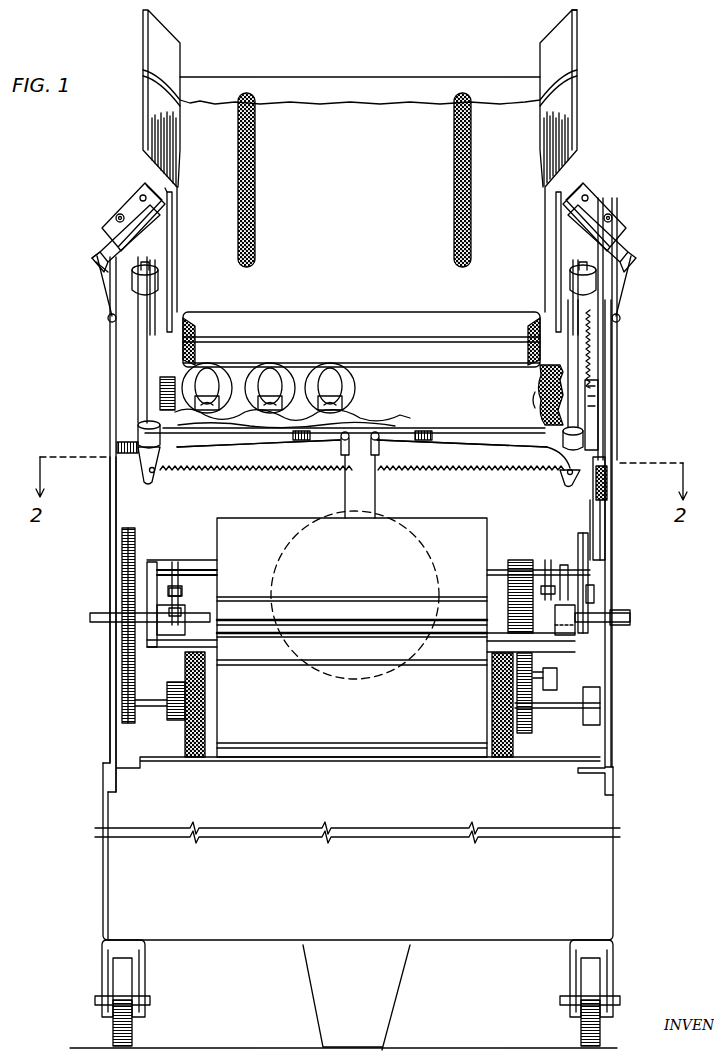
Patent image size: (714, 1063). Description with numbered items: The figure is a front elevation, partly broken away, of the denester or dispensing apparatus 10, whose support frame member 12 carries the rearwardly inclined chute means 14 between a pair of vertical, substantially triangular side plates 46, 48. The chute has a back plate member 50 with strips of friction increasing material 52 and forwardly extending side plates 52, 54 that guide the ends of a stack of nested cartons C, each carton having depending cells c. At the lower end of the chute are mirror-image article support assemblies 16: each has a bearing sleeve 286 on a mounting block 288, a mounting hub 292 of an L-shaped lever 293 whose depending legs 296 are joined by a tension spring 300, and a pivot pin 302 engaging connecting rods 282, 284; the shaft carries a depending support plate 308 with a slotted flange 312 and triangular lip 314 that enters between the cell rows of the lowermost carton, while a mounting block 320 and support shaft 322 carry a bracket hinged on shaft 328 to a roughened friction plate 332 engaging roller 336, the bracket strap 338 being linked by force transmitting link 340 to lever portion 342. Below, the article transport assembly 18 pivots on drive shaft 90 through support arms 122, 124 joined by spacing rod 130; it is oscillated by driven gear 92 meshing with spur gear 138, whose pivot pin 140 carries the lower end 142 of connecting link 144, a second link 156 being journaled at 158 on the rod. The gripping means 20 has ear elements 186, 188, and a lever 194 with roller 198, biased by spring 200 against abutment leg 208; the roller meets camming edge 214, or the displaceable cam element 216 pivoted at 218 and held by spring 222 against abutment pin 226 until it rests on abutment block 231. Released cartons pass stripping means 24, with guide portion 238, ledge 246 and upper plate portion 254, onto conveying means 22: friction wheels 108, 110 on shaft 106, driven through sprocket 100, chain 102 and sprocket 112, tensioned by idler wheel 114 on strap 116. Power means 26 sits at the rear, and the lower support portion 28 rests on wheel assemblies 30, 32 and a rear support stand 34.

The denester or dispensing apparatus 10 is at (638, 335).
The support frame member 12 is at (620, 704).
The chute means 14 is at (592, 121).
The article support assemblies 16 is at (193, 274).
The article transport assembly 18 is at (608, 594).
The article gripping means 20 is at (145, 660).
The article conveying means 22 is at (519, 770).
The article stripping means 24 is at (341, 732).
The power means 26 is at (412, 514).
The lower support portion 28 is at (614, 782).
The wheel assembly 30 is at (616, 963).
The wheel assembly 32 is at (100, 958).
The rear depending support stand 34 is at (400, 968).
The support side wall or plate 46 is at (117, 395).
The support side wall or plate 48 is at (617, 375).
The back plate member 50 is at (352, 138).
The forwardly extending side plate / friction strips 52 is at (150, 43).
The forwardly extending side plate 54 is at (580, 50).
The drive shaft 90 is at (92, 613).
The driven gear 92 is at (519, 560).
The drive sprocket 100 is at (120, 530).
The endless link chain 102 is at (122, 548).
The transverse support shaft 106 is at (565, 708).
The friction wheel 108 is at (496, 762).
The friction wheel 110 is at (194, 760).
The driven sprocket 112 is at (130, 725).
The idler wheel 114 is at (147, 592).
The mounting strap 116 is at (147, 568).
The support arm 122 is at (150, 560).
The support arm 124 is at (560, 625).
The spacing rod 130 is at (205, 568).
The spur gear 138 is at (528, 735).
The pivot pin 140 is at (540, 678).
The lower end of connecting link 142 is at (557, 680).
The adjustable connecting link 144 is at (548, 560).
The second adjustable connecting link 156 is at (183, 590).
The journal of second link on rod 158 is at (175, 560).
The support ear element 186 is at (575, 635).
The support ear element 188 is at (160, 625).
The lever 194 is at (588, 572).
The cam-engaging roller element 198 is at (588, 560).
The tension spring 200 is at (575, 555).
The abutment leg portion 208 is at (594, 600).
The camming edge 214 is at (600, 521).
The displaceable cam element 216 is at (596, 398).
The lateral pivot axis 218 is at (583, 418).
The tension spring 222 is at (592, 362).
The abutment pin 226 is at (595, 390).
The abutment block 231 is at (605, 485).
The angular guide portion 238 is at (368, 556).
The flange or ledge portion 246 is at (350, 620).
The upper plate portion 254 is at (368, 655).
The connecting link or rod 282 is at (380, 490).
The connecting link or rod 284 is at (344, 489).
The bearing sleeve 286 is at (143, 352).
The mounting block 288 is at (128, 423).
The mounting hub 292 is at (610, 457).
The L-shaped lever 293 is at (270, 452).
The depending leg 296 is at (150, 474).
The tension spring 300 is at (357, 462).
The pivot pin or nut and bolt assembly 302 is at (376, 432).
The depending support plate 308 is at (175, 295).
The side flange portion 312 is at (542, 372).
The support ledge or lip 314 is at (535, 400).
The mounting block 320 is at (163, 183).
The support shaft 322 is at (117, 218).
The transverse support shaft 328 is at (143, 195).
The friction plate 332 is at (172, 234).
The roller element 336 is at (102, 234).
The mounting strap 338 is at (96, 258).
The force transmitting link 340 is at (102, 282).
The lever portion 342 is at (108, 316).
The carton C is at (352, 306).
The cell c is at (292, 427).